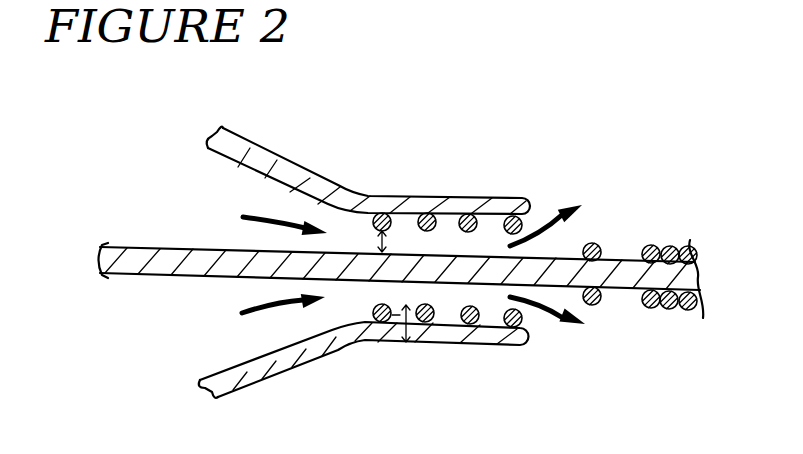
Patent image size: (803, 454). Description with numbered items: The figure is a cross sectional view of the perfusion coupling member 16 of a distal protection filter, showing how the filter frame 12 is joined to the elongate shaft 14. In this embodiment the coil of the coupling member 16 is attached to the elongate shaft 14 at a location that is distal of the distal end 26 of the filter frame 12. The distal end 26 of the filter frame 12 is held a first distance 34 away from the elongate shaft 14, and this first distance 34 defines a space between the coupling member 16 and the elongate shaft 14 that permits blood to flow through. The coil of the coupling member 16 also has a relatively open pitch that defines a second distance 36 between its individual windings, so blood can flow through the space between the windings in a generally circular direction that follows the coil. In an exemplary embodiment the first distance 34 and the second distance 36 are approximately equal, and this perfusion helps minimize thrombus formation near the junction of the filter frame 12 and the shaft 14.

The filter frame 12 is at (302, 178).
The elongate shaft 14 is at (233, 252).
The perfusion coupling member 16 is at (596, 228).
The distal end 26 is at (463, 203).
The first distance 34 is at (377, 242).
The second distance 36 is at (407, 313).